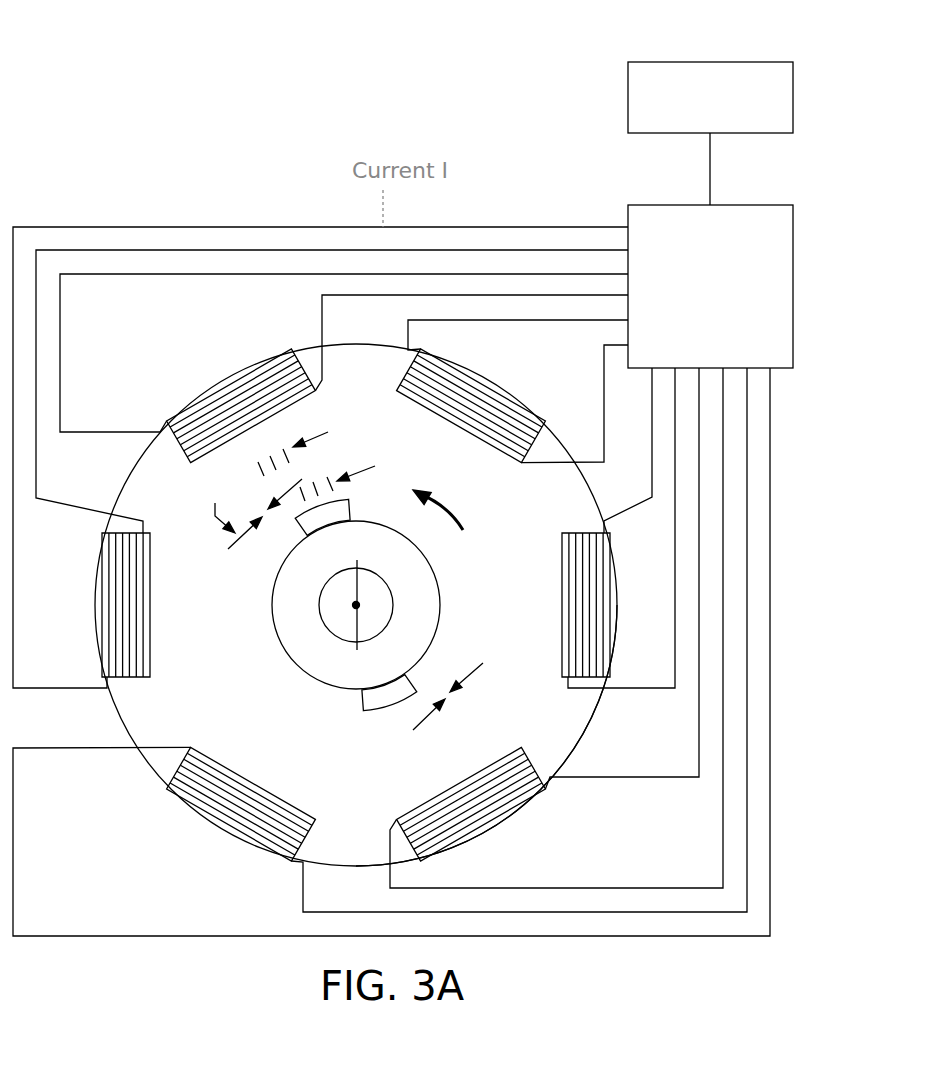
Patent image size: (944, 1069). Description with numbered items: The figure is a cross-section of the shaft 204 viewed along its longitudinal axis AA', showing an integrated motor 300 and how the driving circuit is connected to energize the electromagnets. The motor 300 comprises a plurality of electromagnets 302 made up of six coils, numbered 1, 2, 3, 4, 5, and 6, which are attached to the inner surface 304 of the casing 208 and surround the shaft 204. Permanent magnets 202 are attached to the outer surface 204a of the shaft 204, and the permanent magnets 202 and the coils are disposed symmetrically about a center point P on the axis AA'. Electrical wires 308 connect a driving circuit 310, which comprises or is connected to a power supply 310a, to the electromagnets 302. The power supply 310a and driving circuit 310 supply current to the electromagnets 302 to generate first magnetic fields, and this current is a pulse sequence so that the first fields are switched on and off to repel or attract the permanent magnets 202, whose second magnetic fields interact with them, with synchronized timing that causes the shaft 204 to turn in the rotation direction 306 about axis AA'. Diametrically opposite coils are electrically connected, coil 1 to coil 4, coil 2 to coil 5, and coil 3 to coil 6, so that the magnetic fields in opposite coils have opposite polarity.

The integrated motor 300 is at (186, 186).
The electromagnets 302 is at (254, 804).
The inner surface 304 is at (136, 466).
The rotation 306 is at (448, 503).
The electrical wires 308 is at (800, 618).
The driving circuit 310 is at (735, 205).
The power supply 310a is at (735, 62).
The permanent magnets 202 is at (363, 698).
The shaft 204 is at (272, 605).
The outer surface 204a is at (440, 607).
The casing 208 is at (588, 742).
The coil 1 is at (135, 605).
The coil 2 is at (310, 782).
The coil 3 is at (471, 804).
The coil 4 is at (575, 605).
The coil 5 is at (471, 406).
The coil 6 is at (241, 406).